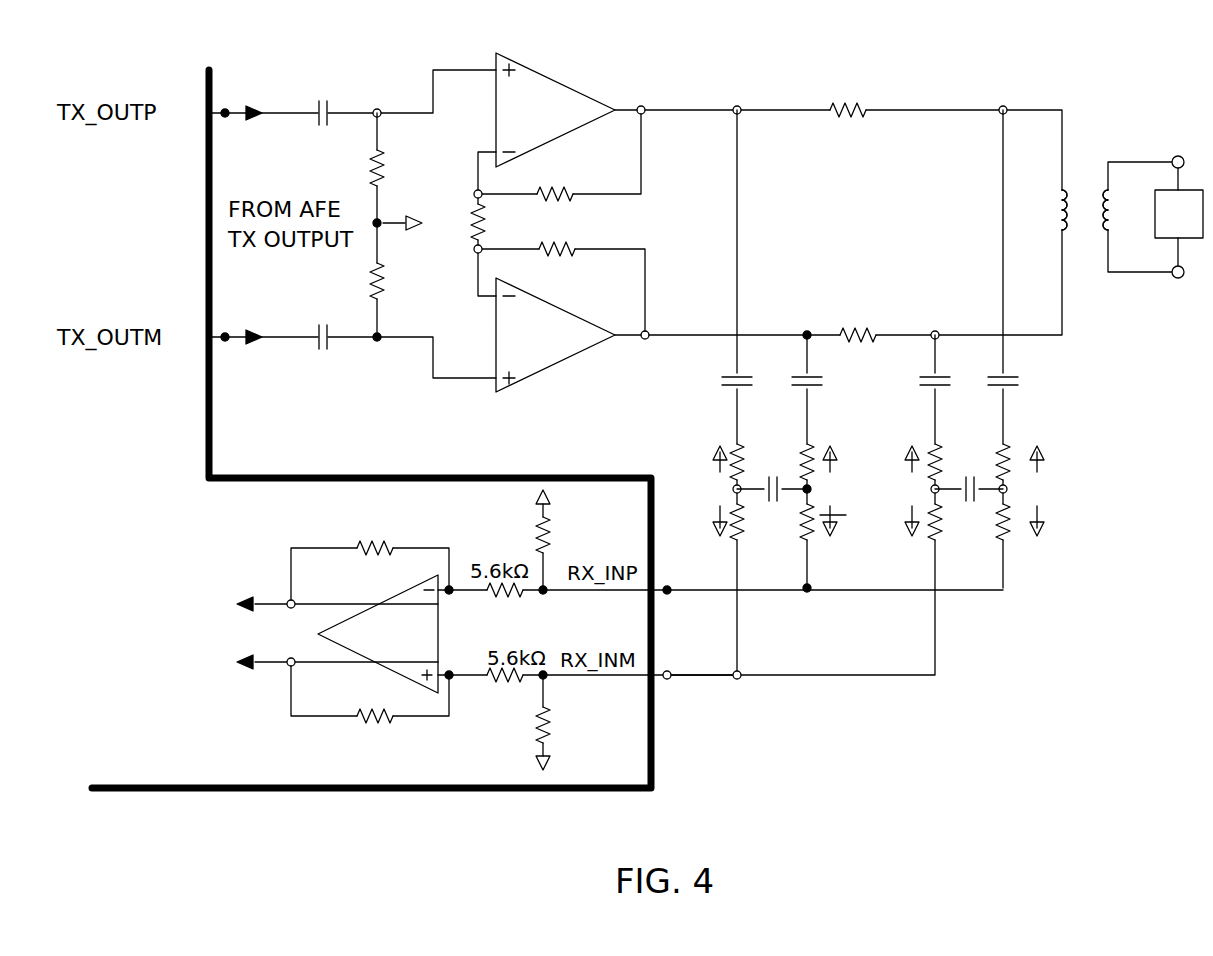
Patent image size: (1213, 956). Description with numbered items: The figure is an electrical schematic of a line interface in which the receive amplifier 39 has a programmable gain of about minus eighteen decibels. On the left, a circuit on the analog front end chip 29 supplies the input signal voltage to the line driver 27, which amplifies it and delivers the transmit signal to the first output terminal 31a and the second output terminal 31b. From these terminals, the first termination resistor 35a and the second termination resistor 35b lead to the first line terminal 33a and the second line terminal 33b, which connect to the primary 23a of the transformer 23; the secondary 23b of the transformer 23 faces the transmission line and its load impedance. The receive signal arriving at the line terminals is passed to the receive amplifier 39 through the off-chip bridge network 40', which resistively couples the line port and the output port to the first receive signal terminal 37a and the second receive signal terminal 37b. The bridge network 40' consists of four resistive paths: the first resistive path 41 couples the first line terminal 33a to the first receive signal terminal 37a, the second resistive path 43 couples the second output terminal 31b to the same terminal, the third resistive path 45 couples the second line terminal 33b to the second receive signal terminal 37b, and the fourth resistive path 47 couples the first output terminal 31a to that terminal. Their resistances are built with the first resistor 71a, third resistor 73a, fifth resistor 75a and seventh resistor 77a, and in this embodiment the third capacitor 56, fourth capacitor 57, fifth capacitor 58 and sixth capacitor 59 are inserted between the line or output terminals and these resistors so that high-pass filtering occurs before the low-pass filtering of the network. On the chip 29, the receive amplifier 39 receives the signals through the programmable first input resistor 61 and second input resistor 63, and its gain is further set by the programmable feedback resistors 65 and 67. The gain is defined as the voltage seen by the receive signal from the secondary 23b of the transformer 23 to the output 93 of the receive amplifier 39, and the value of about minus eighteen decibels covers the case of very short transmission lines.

The transformer 23 is at (1083, 156).
The primary 23a is at (1112, 205).
The secondary 23b is at (1058, 208).
The line driver 27 is at (554, 57).
The analog front end (AFE) chip 29 is at (435, 793).
The first output terminal 31a is at (740, 114).
The second output terminal 31b is at (807, 330).
The first line terminal 33a is at (1001, 116).
The second line terminal 33b is at (938, 332).
The first termination resistor 35a is at (852, 122).
The second termination resistor 35b is at (862, 336).
The first receive signal terminal 37a is at (668, 585).
The second receive signal terminal 37b is at (668, 679).
The receive amplifier 39 is at (272, 709).
The bridge network 40' is at (996, 652).
The first resistive path 41 is at (1005, 565).
The second resistive path 43 is at (810, 560).
The third resistive path 45 is at (934, 580).
The fourth resistive path 47 is at (741, 577).
The third capacitor 56 is at (1018, 378).
The fourth capacitor 57 is at (820, 378).
The fifth capacitor 58 is at (945, 378).
The sixth capacitor 59 is at (723, 377).
The first input resistor 61 is at (540, 535).
The second input resistor 63 is at (540, 725).
The feedback resistor 65 is at (385, 548).
The feedback resistor 67 is at (390, 718).
The first resistor 71a is at (1008, 446).
The third resistor 73a is at (812, 446).
The fifth resistor 75a is at (937, 447).
The seventh resistor 77a is at (736, 446).
The output 93 is at (288, 662).